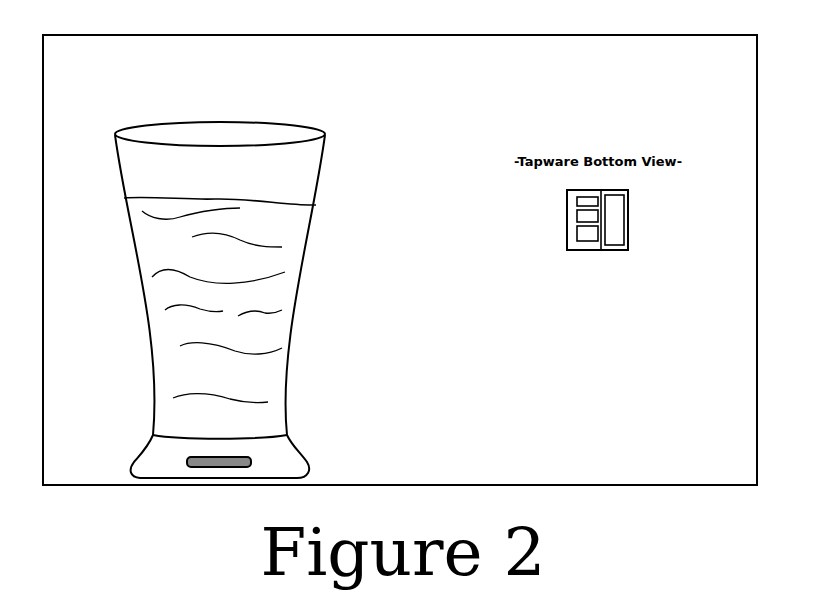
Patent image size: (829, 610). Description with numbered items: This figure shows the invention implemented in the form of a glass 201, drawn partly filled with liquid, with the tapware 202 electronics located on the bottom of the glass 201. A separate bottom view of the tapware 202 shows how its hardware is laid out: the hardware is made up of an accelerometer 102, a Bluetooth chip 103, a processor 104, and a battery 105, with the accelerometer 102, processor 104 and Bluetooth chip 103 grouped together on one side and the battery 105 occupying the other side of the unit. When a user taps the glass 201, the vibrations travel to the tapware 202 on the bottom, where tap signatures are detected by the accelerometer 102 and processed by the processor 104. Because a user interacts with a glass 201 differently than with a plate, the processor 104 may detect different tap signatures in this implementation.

The glass 201 is at (193, 122).
The tapware 202 is at (254, 456).
The processor 104 is at (567, 201).
The accelerometer 102 is at (567, 216).
The Bluetooth chip 103 is at (587, 250).
The battery 105 is at (629, 217).